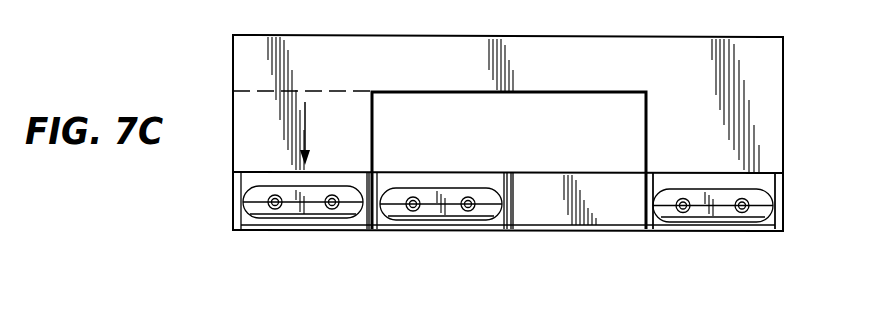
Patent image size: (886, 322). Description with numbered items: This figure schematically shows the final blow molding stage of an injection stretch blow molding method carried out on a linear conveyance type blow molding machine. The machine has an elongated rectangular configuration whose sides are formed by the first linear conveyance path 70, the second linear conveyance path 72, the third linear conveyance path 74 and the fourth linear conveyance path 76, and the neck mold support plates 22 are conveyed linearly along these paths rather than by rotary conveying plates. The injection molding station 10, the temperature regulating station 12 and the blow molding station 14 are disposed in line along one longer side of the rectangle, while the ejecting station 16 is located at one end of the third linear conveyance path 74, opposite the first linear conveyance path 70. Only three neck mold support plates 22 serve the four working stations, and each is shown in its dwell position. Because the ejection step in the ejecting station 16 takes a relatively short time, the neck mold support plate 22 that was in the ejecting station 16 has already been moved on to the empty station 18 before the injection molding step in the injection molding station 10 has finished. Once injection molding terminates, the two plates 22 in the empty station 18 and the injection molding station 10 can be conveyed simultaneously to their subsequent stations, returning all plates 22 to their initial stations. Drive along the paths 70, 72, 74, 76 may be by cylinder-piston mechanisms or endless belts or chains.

The injection molding station 10 is at (449, 230).
The temperature regulating station 12 is at (560, 222).
The blow molding station 14 is at (700, 232).
The ejecting station 16 is at (305, 63).
The empty station 18 is at (322, 230).
The neck mold support plate 22 is at (268, 218).
The first linear conveyance path 70 is at (503, 240).
The second linear conveyance path 72 is at (765, 152).
The third linear conveyance path 74 is at (583, 62).
The fourth linear conveyance path 76 is at (247, 150).